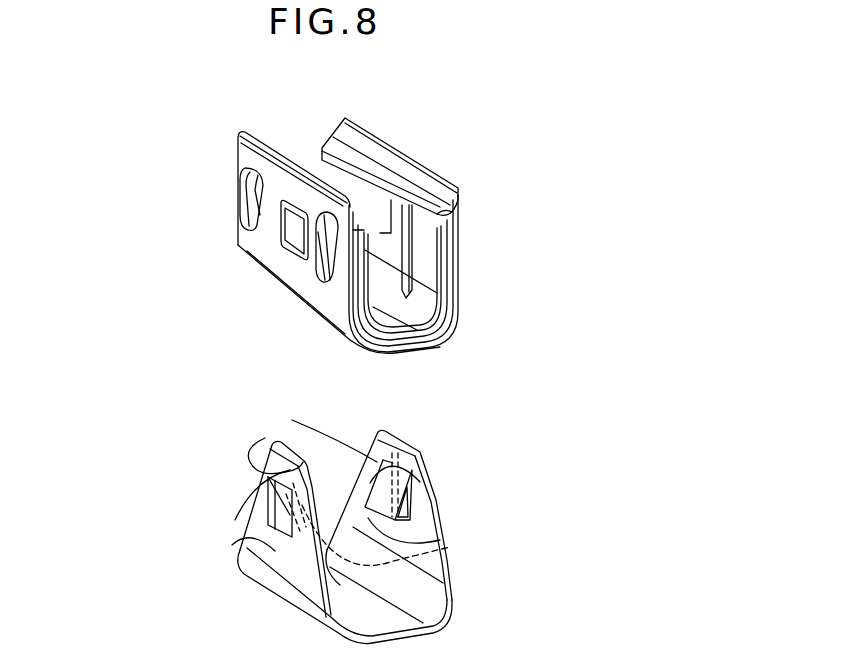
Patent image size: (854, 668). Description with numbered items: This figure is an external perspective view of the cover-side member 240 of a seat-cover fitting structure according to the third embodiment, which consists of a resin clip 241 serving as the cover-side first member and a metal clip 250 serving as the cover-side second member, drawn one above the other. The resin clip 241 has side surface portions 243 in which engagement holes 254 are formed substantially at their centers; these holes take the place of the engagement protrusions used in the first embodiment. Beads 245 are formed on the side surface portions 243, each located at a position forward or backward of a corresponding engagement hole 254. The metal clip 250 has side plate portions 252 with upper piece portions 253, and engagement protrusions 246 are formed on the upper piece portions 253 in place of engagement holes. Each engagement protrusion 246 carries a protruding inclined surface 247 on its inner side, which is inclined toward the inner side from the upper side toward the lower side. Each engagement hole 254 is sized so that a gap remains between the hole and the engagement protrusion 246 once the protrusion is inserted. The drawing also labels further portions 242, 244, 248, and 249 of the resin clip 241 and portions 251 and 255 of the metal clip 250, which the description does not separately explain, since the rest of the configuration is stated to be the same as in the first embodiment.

The cover-side member 240 is at (168, 147).
The resin clip 241 is at (287, 112).
The bottom connecting portion 242 is at (408, 353).
The side surface portions 243 is at (276, 265).
The folded upper bar 244 is at (292, 150).
The beads 245 is at (413, 248).
The engagement protrusions 246 is at (383, 458).
The protruding inclined surface 247 is at (440, 548).
The elongated hole 248 is at (241, 188).
The protruding tab 249 is at (240, 216).
The metal clip 250 is at (165, 447).
The bottom plate 251 is at (415, 635).
The side plate portions 252 is at (420, 517).
The upper piece portions 253 is at (407, 453).
The engagement holes 254 is at (382, 225).
The opening 255 is at (380, 470).